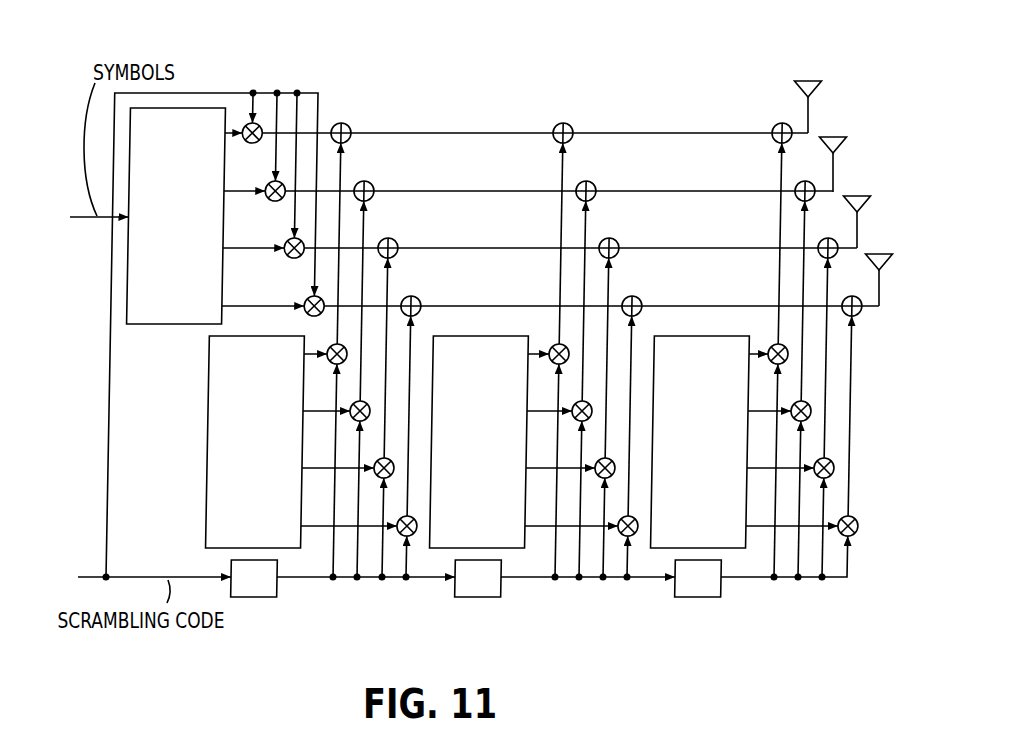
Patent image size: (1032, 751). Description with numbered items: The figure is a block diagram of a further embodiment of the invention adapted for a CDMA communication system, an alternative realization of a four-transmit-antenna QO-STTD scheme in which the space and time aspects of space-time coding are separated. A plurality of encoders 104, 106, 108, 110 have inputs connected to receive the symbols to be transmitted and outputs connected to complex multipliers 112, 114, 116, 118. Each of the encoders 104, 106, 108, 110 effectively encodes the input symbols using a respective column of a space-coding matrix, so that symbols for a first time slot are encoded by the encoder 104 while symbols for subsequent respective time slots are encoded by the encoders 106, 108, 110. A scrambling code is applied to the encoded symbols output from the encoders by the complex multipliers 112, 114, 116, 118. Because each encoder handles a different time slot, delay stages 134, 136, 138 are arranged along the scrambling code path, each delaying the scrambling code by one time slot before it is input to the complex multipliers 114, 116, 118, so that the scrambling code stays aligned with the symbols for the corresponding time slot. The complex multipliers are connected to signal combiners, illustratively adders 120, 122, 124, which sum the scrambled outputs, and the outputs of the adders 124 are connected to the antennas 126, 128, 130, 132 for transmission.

The encoder 104 is at (153, 236).
The encoder 106 is at (236, 463).
The encoder 108 is at (460, 463).
The encoder 110 is at (681, 463).
The complex multiplier 112 is at (285, 80).
The complex multiplier 114 is at (369, 590).
The complex multiplier 116 is at (615, 590).
The complex multiplier 118 is at (844, 590).
The adder 120 is at (337, 112).
The adder 122 is at (564, 112).
The adder 124 is at (758, 113).
The antenna 126 is at (810, 80).
The antenna 128 is at (833, 137).
The antenna 130 is at (857, 195).
The antenna 132 is at (879, 253).
The delay stage 134 is at (248, 598).
The delay stage 136 is at (475, 598).
The delay stage 138 is at (695, 598).